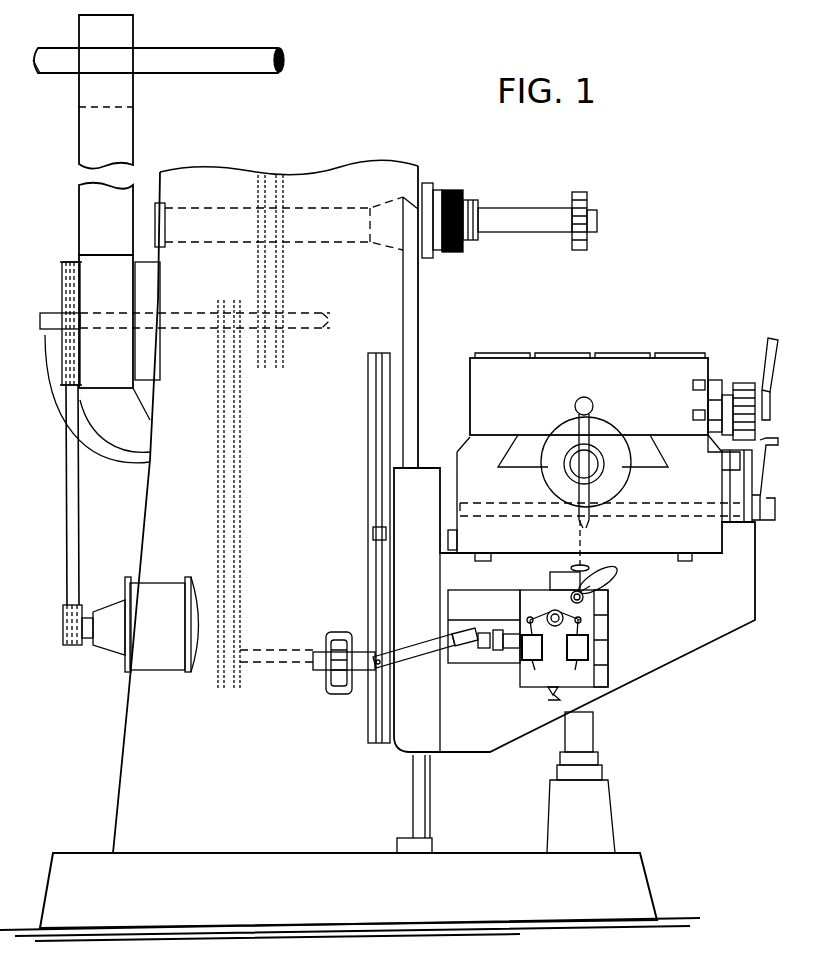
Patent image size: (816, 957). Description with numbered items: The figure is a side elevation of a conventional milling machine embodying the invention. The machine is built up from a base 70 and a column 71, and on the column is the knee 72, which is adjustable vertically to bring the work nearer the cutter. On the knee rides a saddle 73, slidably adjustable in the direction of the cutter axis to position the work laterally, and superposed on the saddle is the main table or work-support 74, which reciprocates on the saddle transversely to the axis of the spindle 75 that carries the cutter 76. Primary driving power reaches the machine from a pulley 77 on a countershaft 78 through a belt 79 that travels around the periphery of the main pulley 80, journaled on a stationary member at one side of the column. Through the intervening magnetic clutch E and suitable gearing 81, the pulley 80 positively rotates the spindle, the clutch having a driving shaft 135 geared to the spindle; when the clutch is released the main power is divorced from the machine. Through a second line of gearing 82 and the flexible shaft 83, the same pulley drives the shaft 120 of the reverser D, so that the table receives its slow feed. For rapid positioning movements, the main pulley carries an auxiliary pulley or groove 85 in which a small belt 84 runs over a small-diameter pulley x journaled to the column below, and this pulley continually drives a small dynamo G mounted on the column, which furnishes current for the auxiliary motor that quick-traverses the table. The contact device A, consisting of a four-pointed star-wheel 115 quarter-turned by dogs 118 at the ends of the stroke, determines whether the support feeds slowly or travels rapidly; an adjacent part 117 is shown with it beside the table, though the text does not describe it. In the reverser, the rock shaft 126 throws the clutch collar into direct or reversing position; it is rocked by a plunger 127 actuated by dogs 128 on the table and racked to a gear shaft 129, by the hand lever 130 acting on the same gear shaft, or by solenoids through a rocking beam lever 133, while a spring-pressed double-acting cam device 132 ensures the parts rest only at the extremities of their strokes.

The base 70 is at (648, 890).
The column 71 is at (126, 796).
The knee 72 is at (752, 605).
The saddle 73 is at (712, 548).
The main table or work-support 74 is at (478, 382).
The spindle 75 is at (527, 210).
The cutter 76 is at (592, 200).
The pulley 77 is at (133, 32).
The countershaft 78 is at (240, 50).
The belt 79 is at (86, 208).
The main pulley 80 is at (105, 272).
The gearing 81 is at (285, 258).
The second line of gearing 82 is at (244, 642).
The flexible shaft 83 is at (412, 654).
The small belt 84 is at (75, 572).
The auxiliary pulley or groove 85 is at (62, 285).
The four-pointed star-wheel 115 is at (740, 383).
The lever 117 is at (760, 385).
The dogs 118 is at (728, 398).
The shaft 120 is at (495, 633).
The rock shaft 126 is at (565, 616).
The plunger 127 is at (580, 545).
The dogs 128 is at (706, 438).
The gear shaft 129 is at (590, 597).
The hand lever 130 is at (616, 573).
The spring pressed double-acting cam device 132 is at (555, 698).
The rocking beam lever 133 is at (544, 618).
The driving shaft 135 is at (308, 320).
The magnetic clutch E is at (120, 385).
The dynamo G is at (168, 592).
The small-diameter pulley x is at (60, 622).
The contact device A is at (780, 377).
The solenoid-operated reverser D is at (628, 640).